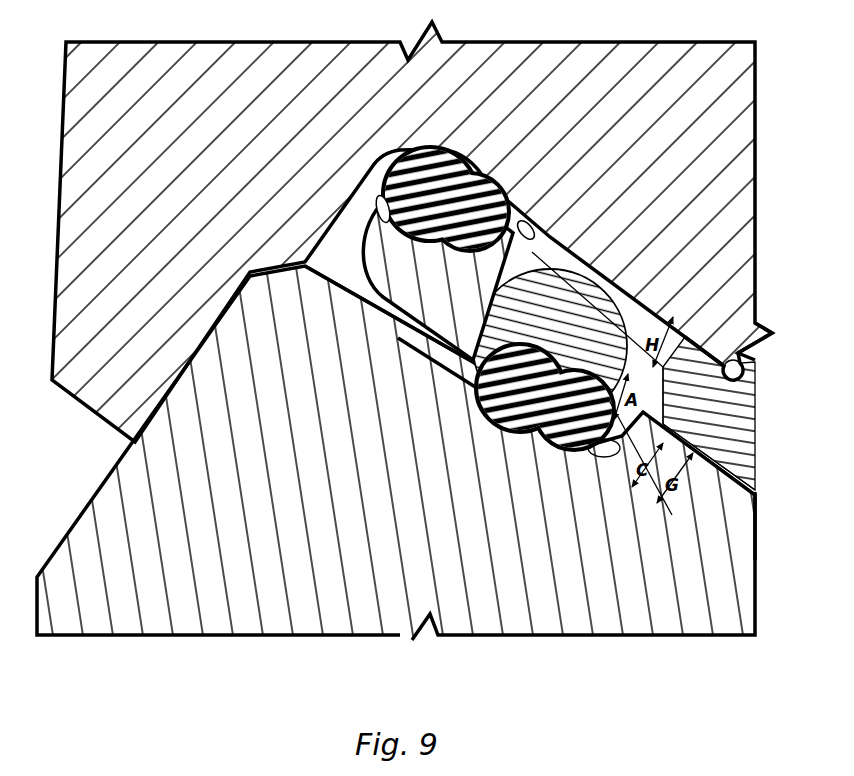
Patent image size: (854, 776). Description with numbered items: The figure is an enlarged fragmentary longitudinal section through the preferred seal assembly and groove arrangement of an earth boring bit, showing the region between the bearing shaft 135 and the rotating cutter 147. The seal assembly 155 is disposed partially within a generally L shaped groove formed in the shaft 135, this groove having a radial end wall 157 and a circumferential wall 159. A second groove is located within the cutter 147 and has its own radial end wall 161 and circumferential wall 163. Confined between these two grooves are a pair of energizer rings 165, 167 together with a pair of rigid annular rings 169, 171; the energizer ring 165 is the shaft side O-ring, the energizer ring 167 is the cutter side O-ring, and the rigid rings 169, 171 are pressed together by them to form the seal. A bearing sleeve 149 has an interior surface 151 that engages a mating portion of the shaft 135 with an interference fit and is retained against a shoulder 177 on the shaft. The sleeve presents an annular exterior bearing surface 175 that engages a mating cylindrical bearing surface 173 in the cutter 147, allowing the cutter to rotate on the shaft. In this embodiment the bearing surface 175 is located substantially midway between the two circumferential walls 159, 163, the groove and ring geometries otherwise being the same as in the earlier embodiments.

The bearing shaft 135 is at (720, 140).
The cutter 147 is at (200, 498).
The bearing sleeve 149 is at (720, 413).
The interior surface 151 is at (773, 332).
The seal assembly 155 is at (373, 300).
The radial end wall 157 is at (371, 170).
The circumferential wall 159 is at (533, 224).
The radial end wall 161 is at (590, 455).
The circumferential wall 163 is at (425, 355).
The energizer ring 165 is at (420, 165).
The energizer ring 167 is at (503, 442).
The rigid annular ring 169 is at (387, 230).
The rigid annular ring 171 is at (598, 258).
The cylindrical bearing surface 173 is at (758, 493).
The annular exterior bearing surface 175 is at (740, 462).
The shoulder 177 is at (684, 336).